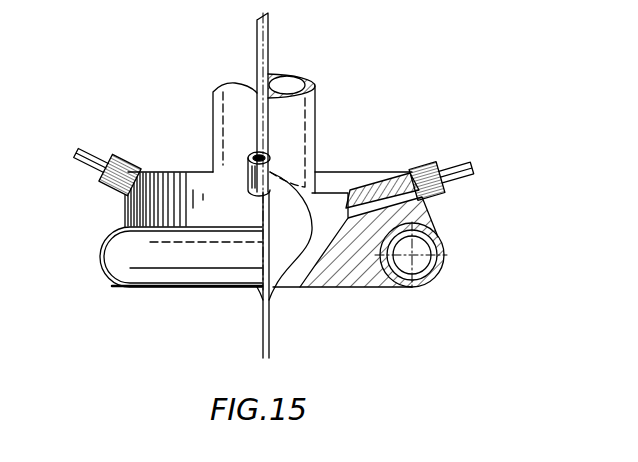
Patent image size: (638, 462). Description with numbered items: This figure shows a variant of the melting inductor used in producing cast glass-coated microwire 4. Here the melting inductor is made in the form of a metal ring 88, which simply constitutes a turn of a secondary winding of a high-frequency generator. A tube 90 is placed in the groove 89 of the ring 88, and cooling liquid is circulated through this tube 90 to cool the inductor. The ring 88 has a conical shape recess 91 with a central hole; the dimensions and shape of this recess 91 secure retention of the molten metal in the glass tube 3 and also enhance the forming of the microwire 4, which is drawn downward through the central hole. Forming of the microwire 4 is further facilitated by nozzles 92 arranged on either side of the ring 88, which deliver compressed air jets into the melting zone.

The tubular sleeve 3 is at (309, 112).
The cast glass-coated microwire 4 is at (272, 337).
The metal ring 88 is at (360, 276).
The groove 89 is at (433, 220).
The tube 90 is at (440, 229).
The conical shape recess 91 is at (317, 289).
The nozzles 92 is at (127, 158).